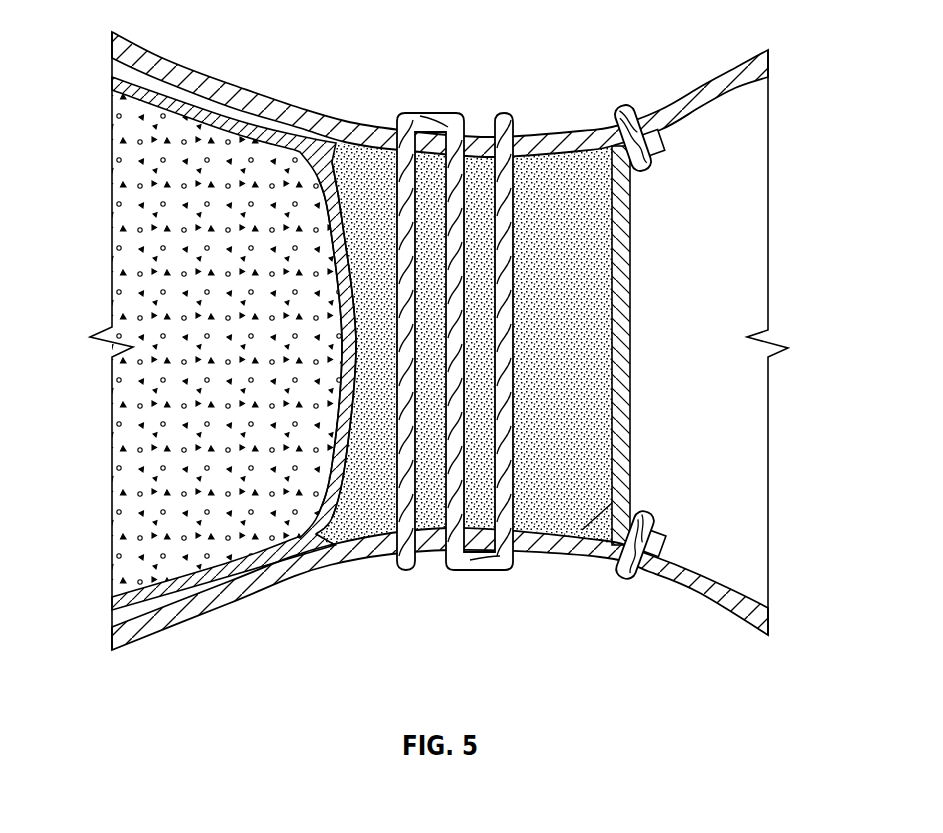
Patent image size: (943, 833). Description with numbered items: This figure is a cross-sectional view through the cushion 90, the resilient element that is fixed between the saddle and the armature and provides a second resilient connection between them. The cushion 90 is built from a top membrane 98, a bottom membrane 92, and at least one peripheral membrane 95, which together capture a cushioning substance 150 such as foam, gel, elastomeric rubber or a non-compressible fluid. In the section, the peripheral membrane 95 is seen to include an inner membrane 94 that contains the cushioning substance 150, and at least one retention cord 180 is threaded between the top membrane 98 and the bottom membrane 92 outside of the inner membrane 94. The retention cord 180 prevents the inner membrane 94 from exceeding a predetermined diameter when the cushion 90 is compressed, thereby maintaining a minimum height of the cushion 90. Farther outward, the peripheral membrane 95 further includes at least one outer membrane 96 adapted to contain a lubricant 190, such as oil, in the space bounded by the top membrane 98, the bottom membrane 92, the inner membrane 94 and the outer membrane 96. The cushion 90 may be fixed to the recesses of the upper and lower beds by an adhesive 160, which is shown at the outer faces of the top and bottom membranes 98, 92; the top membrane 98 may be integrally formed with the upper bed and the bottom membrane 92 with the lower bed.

The cushion 90 is at (125, 82).
The cushioning substance 150 is at (122, 128).
The peripheral membrane 95 is at (332, 156).
The retention cord 180 is at (450, 122).
The lubricant 190 is at (592, 190).
The top membrane 98 is at (723, 85).
The outer membrane 96 is at (623, 215).
The inner membrane 94 is at (345, 298).
The adhesive 160 is at (587, 540).
The bottom membrane 92 is at (738, 603).